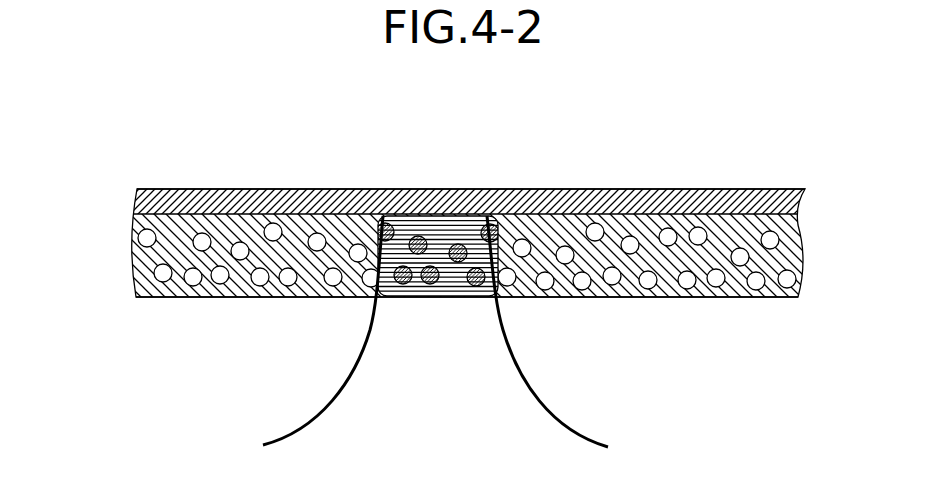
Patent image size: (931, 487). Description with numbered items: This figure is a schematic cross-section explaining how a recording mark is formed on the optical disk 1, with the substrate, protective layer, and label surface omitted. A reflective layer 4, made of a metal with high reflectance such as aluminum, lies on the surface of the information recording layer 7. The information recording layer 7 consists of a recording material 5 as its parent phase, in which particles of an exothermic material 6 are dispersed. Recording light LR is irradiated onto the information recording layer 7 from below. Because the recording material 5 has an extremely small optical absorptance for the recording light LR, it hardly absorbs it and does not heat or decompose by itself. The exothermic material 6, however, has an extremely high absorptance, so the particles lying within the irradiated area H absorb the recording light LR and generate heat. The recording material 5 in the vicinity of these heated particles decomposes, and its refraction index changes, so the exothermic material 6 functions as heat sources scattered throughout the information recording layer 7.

The optical disk 1 is at (136, 141).
The reflective layer 4 is at (134, 193).
The recording material 5 is at (133, 223).
The exothermic material 6 is at (137, 272).
The information recording layer 7 is at (70, 218).
The area irradiated with the recording light H is at (468, 225).
The recording light LR is at (507, 377).